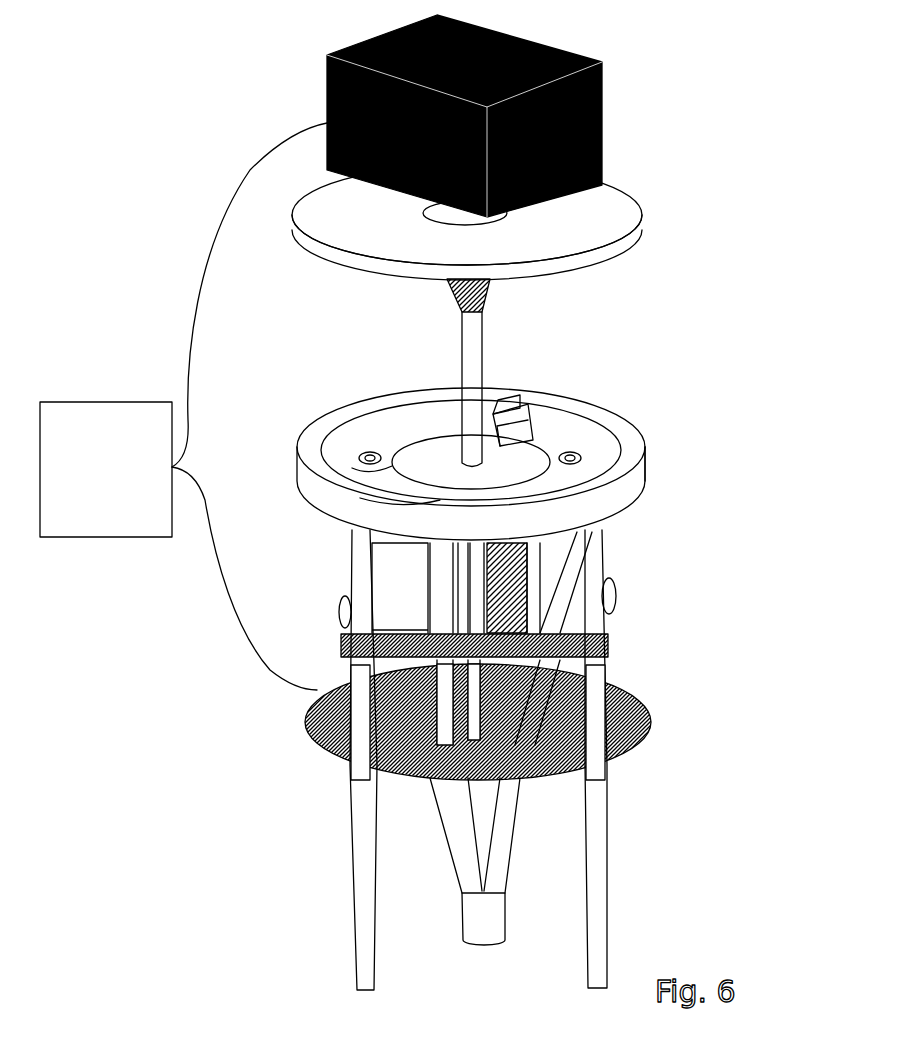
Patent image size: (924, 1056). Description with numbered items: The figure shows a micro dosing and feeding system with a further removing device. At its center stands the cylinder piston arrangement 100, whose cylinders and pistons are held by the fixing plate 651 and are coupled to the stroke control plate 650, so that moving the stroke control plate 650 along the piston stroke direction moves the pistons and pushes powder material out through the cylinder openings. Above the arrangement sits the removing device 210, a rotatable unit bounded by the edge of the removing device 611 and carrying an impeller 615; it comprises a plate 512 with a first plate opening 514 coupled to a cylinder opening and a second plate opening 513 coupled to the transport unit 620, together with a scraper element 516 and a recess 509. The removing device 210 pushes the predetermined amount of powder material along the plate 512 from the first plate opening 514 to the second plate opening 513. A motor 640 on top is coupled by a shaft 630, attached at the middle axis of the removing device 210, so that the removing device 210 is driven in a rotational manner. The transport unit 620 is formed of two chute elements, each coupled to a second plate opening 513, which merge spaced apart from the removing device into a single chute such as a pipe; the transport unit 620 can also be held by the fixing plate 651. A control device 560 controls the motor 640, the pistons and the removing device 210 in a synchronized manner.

The cylinder piston arrangement 100 is at (345, 607).
The removing device 210 is at (652, 437).
The recess 509 is at (510, 413).
The plate 512 is at (358, 458).
The second plate opening 513 is at (370, 450).
The first plate opening 514 is at (360, 498).
The scraper element 516 is at (497, 413).
The control device 560 is at (183, 406).
The edge of the removing device 611 is at (647, 468).
The impeller 615 is at (513, 460).
The transport unit 620 is at (502, 818).
The shaft 630 is at (472, 328).
The motor 640 is at (602, 103).
The stroke control plate 650 is at (653, 724).
The fixing plate 651 is at (617, 603).